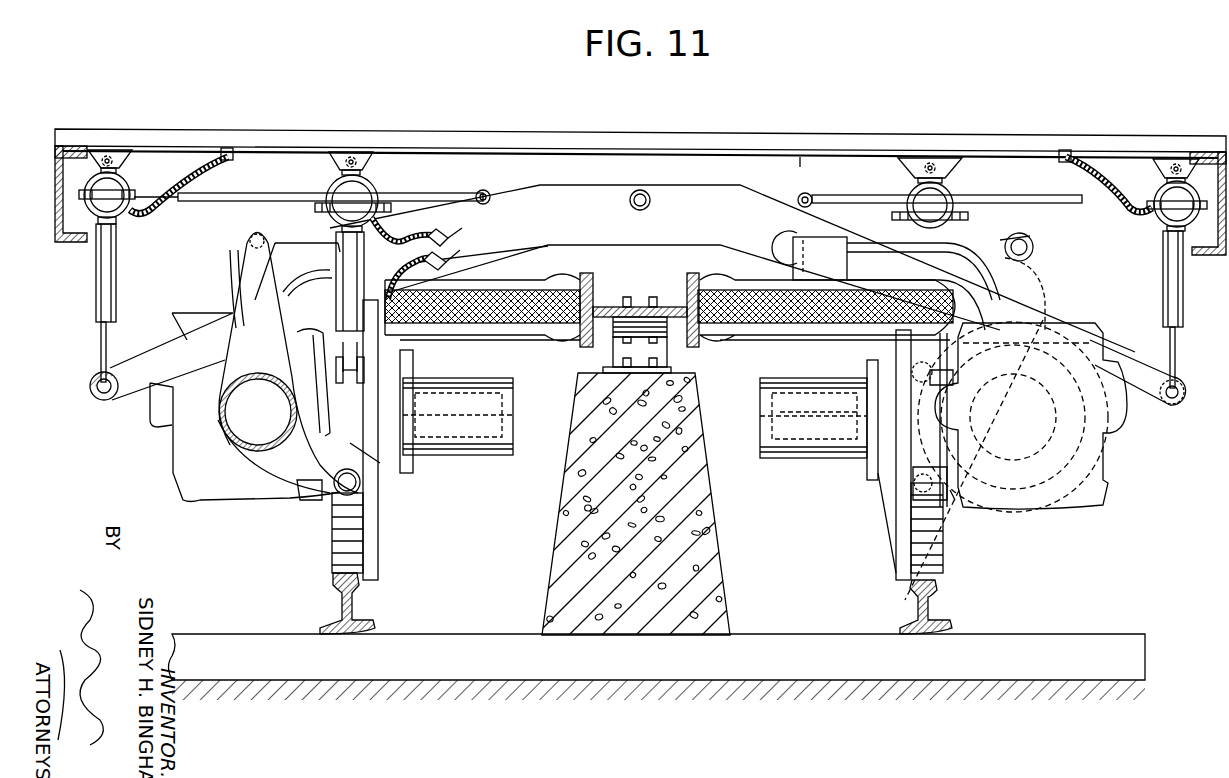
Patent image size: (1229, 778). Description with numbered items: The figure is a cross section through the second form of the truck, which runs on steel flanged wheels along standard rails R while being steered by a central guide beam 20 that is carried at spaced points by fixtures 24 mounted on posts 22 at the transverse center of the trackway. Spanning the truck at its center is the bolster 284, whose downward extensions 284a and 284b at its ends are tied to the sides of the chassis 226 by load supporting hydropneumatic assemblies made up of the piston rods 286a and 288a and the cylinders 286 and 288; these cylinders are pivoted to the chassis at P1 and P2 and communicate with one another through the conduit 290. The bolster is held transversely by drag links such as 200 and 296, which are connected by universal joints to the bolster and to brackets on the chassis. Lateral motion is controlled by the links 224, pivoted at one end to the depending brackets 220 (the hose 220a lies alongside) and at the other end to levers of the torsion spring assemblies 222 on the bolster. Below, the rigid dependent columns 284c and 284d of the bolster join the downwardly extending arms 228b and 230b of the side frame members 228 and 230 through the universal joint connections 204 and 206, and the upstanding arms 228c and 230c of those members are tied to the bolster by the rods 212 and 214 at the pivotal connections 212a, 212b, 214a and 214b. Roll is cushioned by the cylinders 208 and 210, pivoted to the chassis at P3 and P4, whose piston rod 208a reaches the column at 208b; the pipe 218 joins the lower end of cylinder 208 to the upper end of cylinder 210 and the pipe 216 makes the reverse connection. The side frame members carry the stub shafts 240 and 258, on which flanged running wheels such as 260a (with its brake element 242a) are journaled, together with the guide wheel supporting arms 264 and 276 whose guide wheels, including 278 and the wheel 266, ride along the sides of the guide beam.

The guide beam 20 is at (596, 294).
The posts 22 is at (656, 491).
The fixtures 24 is at (678, 350).
The drag link 200 is at (630, 200).
The universal joint connection 204 is at (352, 490).
The universal joint connection 206 is at (890, 515).
The cylinder 208 is at (366, 196).
The piston rod 208a is at (340, 332).
The connection point 208b is at (370, 372).
The cylinder 210 is at (920, 193).
The rod 212 is at (1019, 234).
The pivotal connection 212a is at (1034, 248).
The pivotal connection 212b is at (895, 228).
The rod 214 is at (315, 240).
The pivotal connection 214a is at (250, 245).
The pivotal connection 214b is at (403, 240).
The pipe 216 is at (458, 234).
The pipe 218 is at (462, 248).
The depending bracket 220 is at (1110, 158).
The hose 220a is at (170, 158).
The torsion spring assembly 222 is at (790, 242).
The link 224 is at (240, 196).
The chassis 226 is at (540, 146).
The side frame member 228 is at (990, 400).
The downwardly extending arm 228b is at (952, 500).
The upstanding arm 228c is at (1030, 250).
The side frame member 230 is at (237, 433).
The downwardly extending arm 230b is at (297, 500).
The upstanding arm 230c is at (284, 359).
The stub shaft 240 is at (790, 460).
The brake shoe 242a is at (932, 550).
The stub shaft 258 is at (468, 460).
The flanged steel running wheel 260a is at (334, 557).
The guide wheel supporting arm 264 is at (1025, 290).
The bearing housing 266 is at (790, 346).
The guide wheel supporting arm 276 is at (232, 280).
The guide wheel 278 is at (515, 344).
The bolster 284 is at (717, 212).
The downward extension 284a is at (120, 400).
The downward extension 284b is at (1150, 406).
The dependent column 284c is at (380, 463).
The dependent column 284d is at (862, 414).
The cylinder 286 is at (95, 287).
The piston rod 286a is at (100, 347).
The cylinder 288 is at (1164, 292).
The piston rod 288a is at (1170, 340).
The conduit 290 is at (798, 155).
The drag link 296 is at (90, 389).
The pivot point P1 is at (109, 150).
The pivot point P2 is at (1178, 160).
The pivot point P3 is at (356, 154).
The pivot point P4 is at (932, 160).
The rails R is at (358, 606).